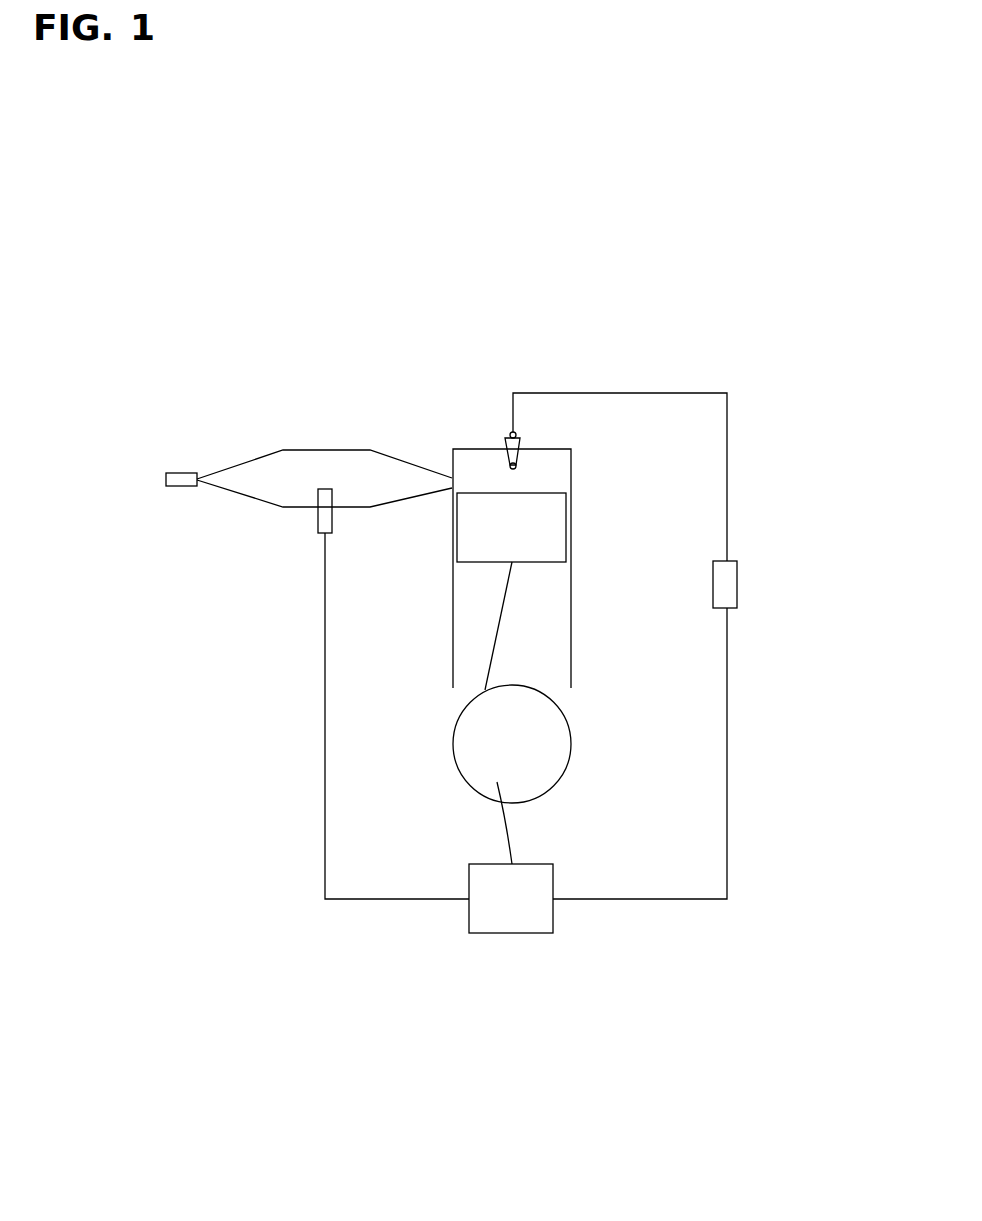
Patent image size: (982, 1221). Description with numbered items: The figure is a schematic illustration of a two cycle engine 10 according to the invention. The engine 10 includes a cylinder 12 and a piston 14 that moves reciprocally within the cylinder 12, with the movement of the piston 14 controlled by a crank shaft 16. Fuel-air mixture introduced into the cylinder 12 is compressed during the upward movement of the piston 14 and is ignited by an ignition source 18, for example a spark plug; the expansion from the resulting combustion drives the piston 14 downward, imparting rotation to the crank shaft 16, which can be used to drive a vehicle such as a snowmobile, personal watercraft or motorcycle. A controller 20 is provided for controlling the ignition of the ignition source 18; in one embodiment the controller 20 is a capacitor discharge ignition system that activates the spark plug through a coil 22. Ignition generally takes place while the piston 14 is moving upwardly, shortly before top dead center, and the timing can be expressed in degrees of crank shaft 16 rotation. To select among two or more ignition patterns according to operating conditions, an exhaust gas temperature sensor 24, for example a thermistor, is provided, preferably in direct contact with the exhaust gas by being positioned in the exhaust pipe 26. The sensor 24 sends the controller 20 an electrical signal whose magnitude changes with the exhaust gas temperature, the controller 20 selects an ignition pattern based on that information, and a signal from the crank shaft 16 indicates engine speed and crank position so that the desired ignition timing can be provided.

The two cycle engine 10 is at (310, 330).
The cylinder 12 is at (565, 587).
The piston 14 is at (477, 522).
The crank shaft 16 is at (550, 760).
The ignition source 18 is at (520, 442).
The controller 20 is at (508, 925).
The coil 22 is at (738, 588).
The exhaust gas temperature sensor 24 is at (317, 520).
The exhaust pipe 26 is at (267, 465).